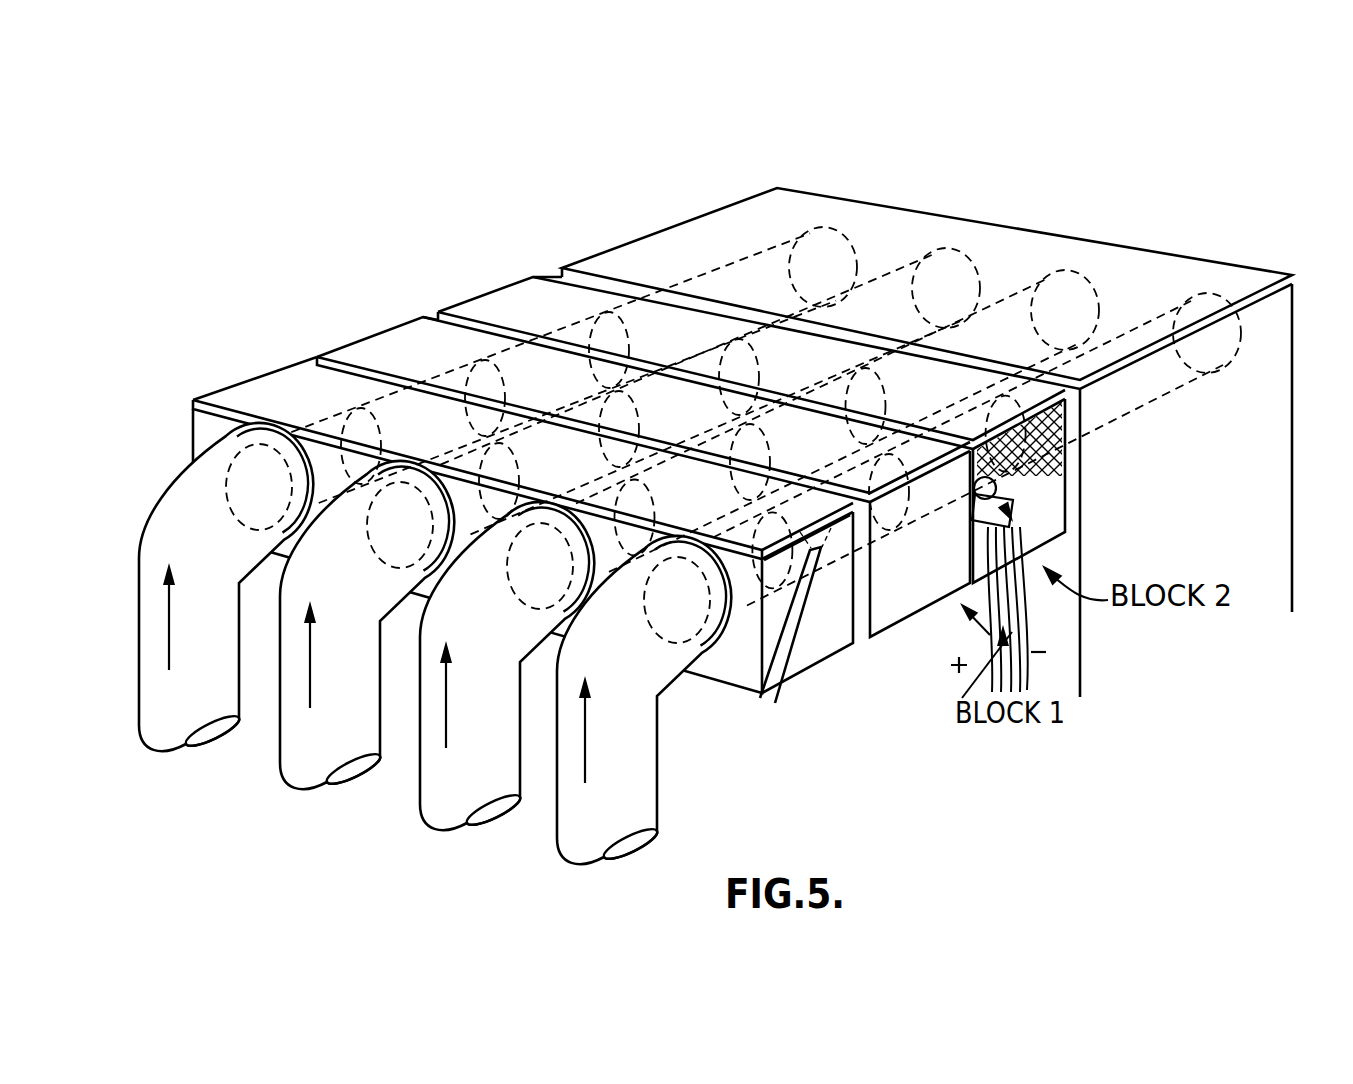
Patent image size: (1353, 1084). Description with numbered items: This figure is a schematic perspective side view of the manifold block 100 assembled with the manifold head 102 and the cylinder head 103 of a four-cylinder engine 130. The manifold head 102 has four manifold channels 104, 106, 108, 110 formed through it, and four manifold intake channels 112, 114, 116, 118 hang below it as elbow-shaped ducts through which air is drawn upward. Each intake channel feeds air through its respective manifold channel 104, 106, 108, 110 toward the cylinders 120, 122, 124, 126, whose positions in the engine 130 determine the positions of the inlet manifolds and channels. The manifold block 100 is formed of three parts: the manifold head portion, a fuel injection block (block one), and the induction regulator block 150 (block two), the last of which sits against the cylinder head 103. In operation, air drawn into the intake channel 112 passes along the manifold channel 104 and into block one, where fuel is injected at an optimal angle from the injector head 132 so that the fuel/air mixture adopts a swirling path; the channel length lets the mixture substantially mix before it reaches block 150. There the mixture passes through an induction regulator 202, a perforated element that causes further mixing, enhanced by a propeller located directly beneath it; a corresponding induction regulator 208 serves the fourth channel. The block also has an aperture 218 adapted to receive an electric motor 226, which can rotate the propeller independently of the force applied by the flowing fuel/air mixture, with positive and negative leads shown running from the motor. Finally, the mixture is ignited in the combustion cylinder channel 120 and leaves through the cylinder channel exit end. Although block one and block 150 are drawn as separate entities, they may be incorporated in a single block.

The manifold block 100 is at (332, 385).
The manifold head 102 is at (242, 378).
The cylinder head 103 is at (615, 255).
The manifold channel 104 is at (320, 450).
The manifold channel 106 is at (467, 485).
The manifold channel 108 is at (589, 522).
The manifold channel 110 is at (729, 556).
The manifold intake channel 112 is at (155, 652).
The manifold intake channel 114 is at (293, 687).
The manifold intake channel 116 is at (423, 735).
The manifold intake channel 118 is at (563, 775).
The cylinder 120 is at (807, 240).
The cylinder 122 is at (943, 268).
The cylinder 124 is at (1070, 300).
The cylinder 126 is at (1190, 313).
The engine 130 is at (1108, 631).
The injector head 132 is at (793, 627).
The block 2 150 is at (1062, 503).
The induction regulator 202 is at (1003, 493).
The induction regulator 208 is at (1037, 437).
The aperture 218 is at (1025, 548).
The electric motor 226 is at (1020, 655).